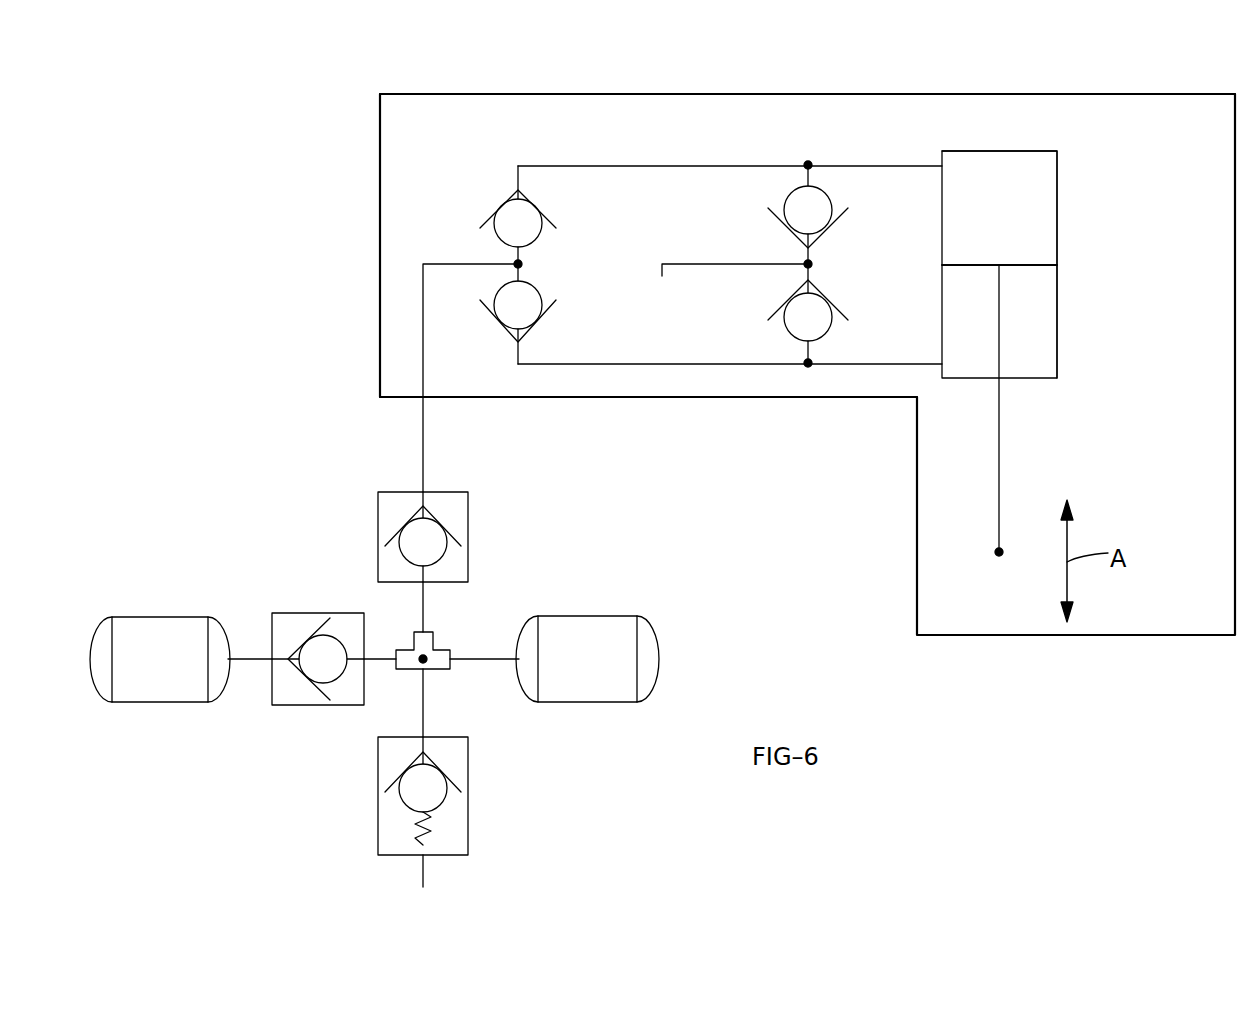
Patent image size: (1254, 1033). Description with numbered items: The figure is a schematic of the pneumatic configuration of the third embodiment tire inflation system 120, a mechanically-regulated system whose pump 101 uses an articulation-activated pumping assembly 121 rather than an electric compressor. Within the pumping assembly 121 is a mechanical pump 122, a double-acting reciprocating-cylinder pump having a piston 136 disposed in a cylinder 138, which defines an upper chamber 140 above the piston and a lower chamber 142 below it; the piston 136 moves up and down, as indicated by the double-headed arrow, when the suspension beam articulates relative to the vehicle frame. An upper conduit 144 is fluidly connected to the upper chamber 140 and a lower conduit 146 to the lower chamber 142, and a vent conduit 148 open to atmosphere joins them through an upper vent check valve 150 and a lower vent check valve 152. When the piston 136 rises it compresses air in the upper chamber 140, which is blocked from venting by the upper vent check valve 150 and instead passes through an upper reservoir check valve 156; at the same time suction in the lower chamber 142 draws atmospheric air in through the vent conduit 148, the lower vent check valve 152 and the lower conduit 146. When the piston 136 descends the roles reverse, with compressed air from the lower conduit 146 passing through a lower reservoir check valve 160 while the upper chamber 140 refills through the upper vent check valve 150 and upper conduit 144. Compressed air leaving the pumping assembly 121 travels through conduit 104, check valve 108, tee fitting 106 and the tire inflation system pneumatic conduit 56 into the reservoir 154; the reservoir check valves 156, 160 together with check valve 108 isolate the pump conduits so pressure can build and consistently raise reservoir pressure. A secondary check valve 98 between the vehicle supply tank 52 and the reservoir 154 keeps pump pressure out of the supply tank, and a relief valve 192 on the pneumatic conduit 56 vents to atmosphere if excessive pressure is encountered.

The vehicle supply tank 52 is at (181, 659).
The tire inflation system pneumatic conduit 56 is at (490, 670).
The secondary check valve 98 is at (305, 612).
The pump 101 is at (635, 410).
The conduit 104 is at (423, 444).
The tee fitting 106 is at (442, 648).
The check valve 108 is at (445, 490).
The third embodiment tire inflation system 120 is at (243, 138).
The articulation-activated pumping assembly 121 is at (775, 400).
The mechanical pump 122 is at (1070, 202).
The piston 136 is at (1025, 265).
The cylinder 138 is at (1057, 320).
The upper chamber 140 is at (1033, 151).
The lower chamber 142 is at (1057, 358).
The upper conduit 144 is at (612, 166).
The lower conduit 146 is at (645, 364).
The vent conduit 148 is at (707, 262).
The upper vent check valve 150 is at (828, 226).
The lower vent check valve 152 is at (825, 298).
The reservoir 154 is at (587, 659).
The upper reservoir check valve 156 is at (503, 205).
The lower reservoir check valve 160 is at (537, 320).
The relief valve 192 is at (468, 822).